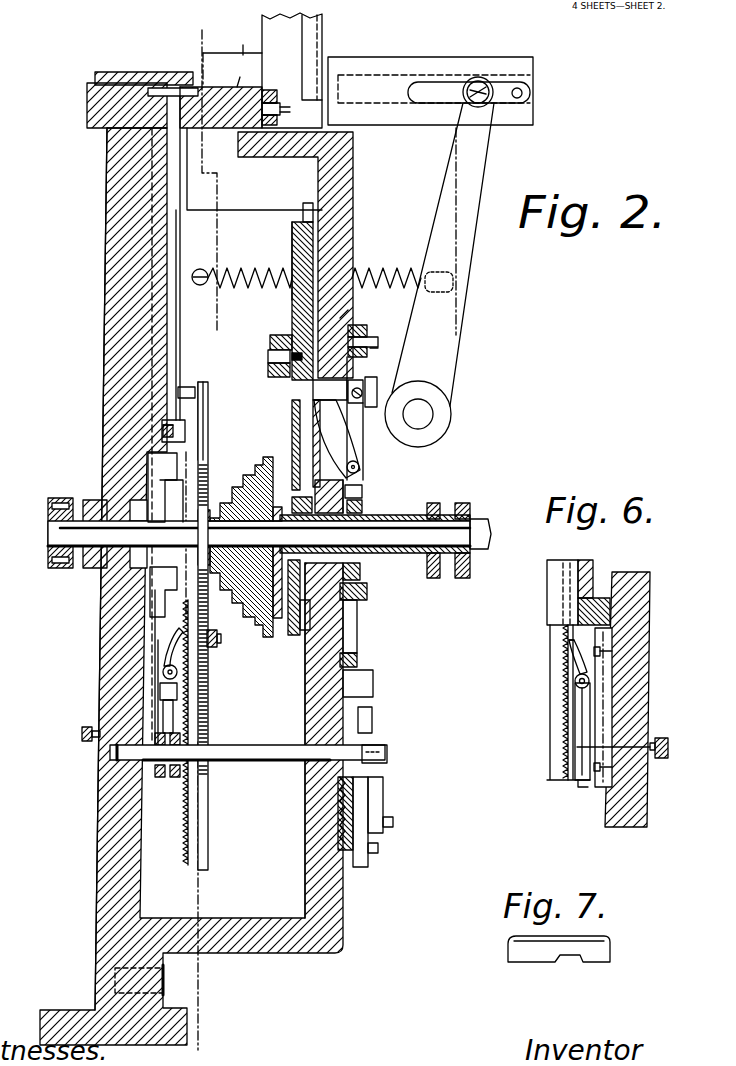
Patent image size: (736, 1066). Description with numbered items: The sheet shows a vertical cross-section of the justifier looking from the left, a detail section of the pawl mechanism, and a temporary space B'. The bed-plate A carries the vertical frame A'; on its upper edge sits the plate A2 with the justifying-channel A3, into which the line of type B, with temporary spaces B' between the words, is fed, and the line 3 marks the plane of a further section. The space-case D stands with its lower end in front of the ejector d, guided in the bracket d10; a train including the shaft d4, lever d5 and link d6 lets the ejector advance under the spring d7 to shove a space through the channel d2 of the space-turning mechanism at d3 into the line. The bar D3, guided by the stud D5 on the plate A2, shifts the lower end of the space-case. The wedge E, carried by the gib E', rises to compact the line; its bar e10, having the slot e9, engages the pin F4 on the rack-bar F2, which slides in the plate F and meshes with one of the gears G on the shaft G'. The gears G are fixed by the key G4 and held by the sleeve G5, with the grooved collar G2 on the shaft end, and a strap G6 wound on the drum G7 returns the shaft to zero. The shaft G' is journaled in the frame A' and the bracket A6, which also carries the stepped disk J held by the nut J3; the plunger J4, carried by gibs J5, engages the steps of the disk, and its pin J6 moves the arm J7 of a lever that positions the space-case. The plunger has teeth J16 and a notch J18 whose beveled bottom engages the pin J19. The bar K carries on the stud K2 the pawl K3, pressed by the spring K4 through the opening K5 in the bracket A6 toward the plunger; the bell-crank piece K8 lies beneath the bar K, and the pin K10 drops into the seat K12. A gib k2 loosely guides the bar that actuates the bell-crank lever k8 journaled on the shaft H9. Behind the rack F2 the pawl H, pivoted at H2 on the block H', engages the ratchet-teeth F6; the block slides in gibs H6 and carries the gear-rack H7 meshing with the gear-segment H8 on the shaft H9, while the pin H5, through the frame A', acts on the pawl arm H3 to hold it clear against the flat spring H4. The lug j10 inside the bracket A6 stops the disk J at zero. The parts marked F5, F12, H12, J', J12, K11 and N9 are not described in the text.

In FIG. 2, the bed-plate A is at (196, 597).
In FIG. 2, the vertical frame A' is at (87, 569).
In FIG. 2, the plate A2 is at (87, 98).
In FIG. 2, the justifying-channel A3 is at (178, 72).
In FIG. 2, the bracket A6 is at (306, 815).
In FIG. 2, the line of type B is at (184, 77).
In FIG. 7, the temporary space B' is at (559, 961).
In FIG. 2, the ejector d is at (352, 110).
In FIG. 2, the channel d2 is at (234, 75).
In FIG. 2, the space-turning mechanism d3 is at (232, 42).
In FIG. 2, the space-case D is at (292, 70).
In FIG. 2, the bar D3 is at (275, 90).
In FIG. 2, the stud D5 is at (285, 114).
In FIG. 2, the shaft d4 is at (418, 414).
In FIG. 2, the lever d5 is at (446, 172).
In FIG. 2, the link d6 is at (490, 84).
In FIG. 2, the spring d7 is at (388, 268).
In FIG. 2, the bracket d10 is at (457, 373).
In FIG. 2, the wedge E is at (187, 253).
In FIG. 2, the gib E' is at (236, 290).
In FIG. 2, the slot e9 is at (160, 429).
In FIG. 2, the bar e10 is at (187, 423).
In FIG. 2, the plate F is at (165, 487).
In FIG. 2, the rack-bar F2 is at (204, 848).
In FIG. 2, the pin F4 is at (190, 388).
In FIG. 2, the slide block F5 is at (165, 728).
In FIG. 2, the ratchet-teeth F6 is at (183, 840).
In FIG. 6, the ratchet-teeth F6 is at (563, 772).
In FIG. 2, the plate F12 is at (214, 438).
In FIG. 6, the plate F12 is at (550, 752).
In FIG. 2, the gears G is at (240, 544).
In FIG. 2, the gear-shaft G' is at (349, 512).
In FIG. 2, the grooved collar G2 is at (460, 578).
In FIG. 2, the key G4 is at (259, 534).
In FIG. 2, the sleeve G5 is at (372, 514).
In FIG. 2, the strap G6 is at (62, 500).
In FIG. 2, the drum G7 is at (62, 534).
In FIG. 2, the pawl H is at (198, 654).
In FIG. 6, the pawl H is at (552, 660).
In FIG. 2, the block H' is at (116, 667).
In FIG. 6, the block H' is at (634, 707).
In FIG. 2, the pivot H2 is at (162, 672).
In FIG. 6, the pivot H2 is at (575, 684).
In FIG. 6, the arm H3 is at (575, 720).
In FIG. 6, the flat spring H4 is at (572, 652).
In FIG. 2, the pin H5 is at (96, 729).
In FIG. 6, the pin H5 is at (655, 742).
In FIG. 6, the gibs H6 is at (598, 790).
In FIG. 2, the gear-rack H7 is at (178, 712).
In FIG. 6, the gear-rack H7 is at (578, 787).
In FIG. 2, the gear-segment H8 is at (180, 740).
In FIG. 2, the shaft H9 is at (390, 757).
In FIG. 2, the nut H12 is at (82, 735).
In FIG. 6, the nut H12 is at (668, 752).
In FIG. 2, the stepped disk J is at (282, 445).
In FIG. 2, the bar end J' is at (365, 496).
In FIG. 2, the nut J3 is at (361, 572).
In FIG. 2, the plunger J4 is at (292, 316).
In FIG. 2, the gibs J5 is at (306, 204).
In FIG. 2, the pin J6 is at (265, 356).
In FIG. 2, the lever-arm J7 is at (270, 338).
In FIG. 2, the pin J12 is at (280, 340).
In FIG. 2, the teeth J16 is at (292, 380).
In FIG. 2, the notch J18 is at (292, 296).
In FIG. 2, the pin J19 is at (343, 320).
In FIG. 2, the lug j10 is at (303, 628).
In FIG. 2, the bar K is at (338, 496).
In FIG. 2, the stud K2 is at (360, 468).
In FIG. 2, the pawl K3 is at (337, 439).
In FIG. 2, the spring K4 is at (352, 437).
In FIG. 2, the opening K5 is at (338, 391).
In FIG. 2, the bell-crank piece K8 is at (362, 620).
In FIG. 2, the pin K10 is at (368, 333).
In FIG. 2, the pin K11 is at (372, 349).
In FIG. 2, the seat K12 is at (347, 328).
In FIG. 2, the gib k2 is at (374, 680).
In FIG. 2, the bell-crank lever k8 is at (373, 720).
In FIG. 2, the pinion N9 is at (288, 484).
In FIG. 2, the section line 3 is at (189, 990).